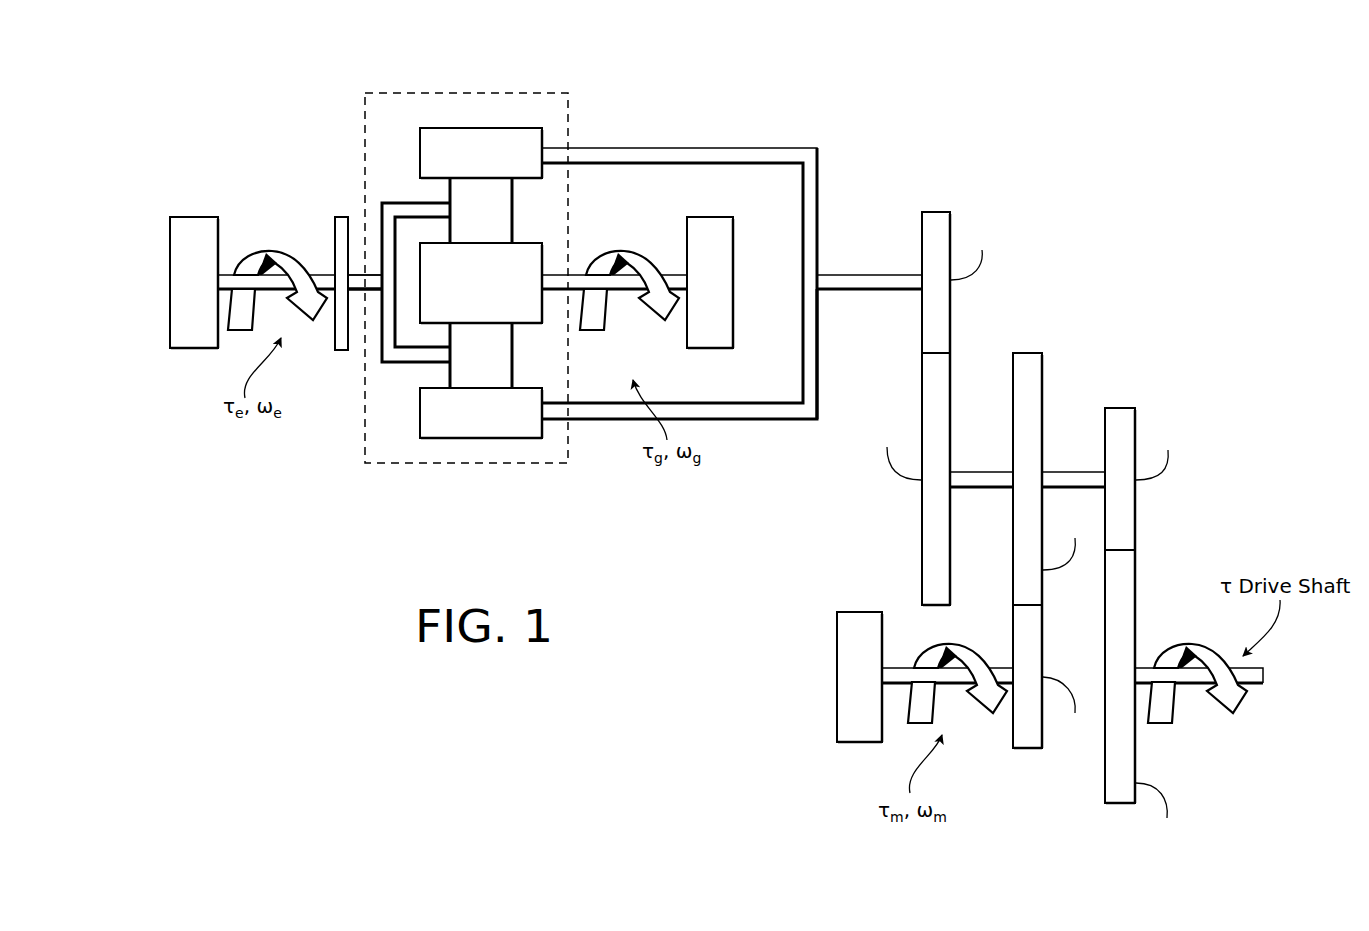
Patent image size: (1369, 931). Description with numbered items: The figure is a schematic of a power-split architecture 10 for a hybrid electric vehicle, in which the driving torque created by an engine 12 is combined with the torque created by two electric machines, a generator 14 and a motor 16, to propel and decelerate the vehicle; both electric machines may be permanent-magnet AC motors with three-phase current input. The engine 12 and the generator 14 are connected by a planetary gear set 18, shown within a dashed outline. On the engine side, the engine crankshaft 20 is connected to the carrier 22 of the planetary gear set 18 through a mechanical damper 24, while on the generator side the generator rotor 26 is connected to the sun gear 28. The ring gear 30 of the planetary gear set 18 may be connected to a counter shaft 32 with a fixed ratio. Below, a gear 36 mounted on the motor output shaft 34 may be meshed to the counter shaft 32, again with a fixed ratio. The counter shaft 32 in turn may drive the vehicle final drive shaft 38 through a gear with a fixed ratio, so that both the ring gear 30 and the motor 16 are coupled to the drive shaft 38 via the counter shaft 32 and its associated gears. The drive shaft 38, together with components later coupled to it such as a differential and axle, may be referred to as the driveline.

The power-split architecture 10 is at (1008, 142).
The engine 12 is at (192, 217).
The generator 14 is at (734, 283).
The motor 16 is at (861, 612).
The planetary gear set 18 is at (392, 93).
The engine crankshaft 20 is at (231, 275).
The carrier 22 is at (400, 203).
The mechanical damper 24 is at (333, 245).
The generator rotor 26 is at (675, 276).
The sun gear 28 is at (526, 243).
The ring gear 30 is at (485, 438).
The counter shaft 32 is at (963, 470).
The motor output shaft 34 is at (951, 688).
The gear 36 is at (1043, 652).
The drive shaft 38 is at (1148, 665).